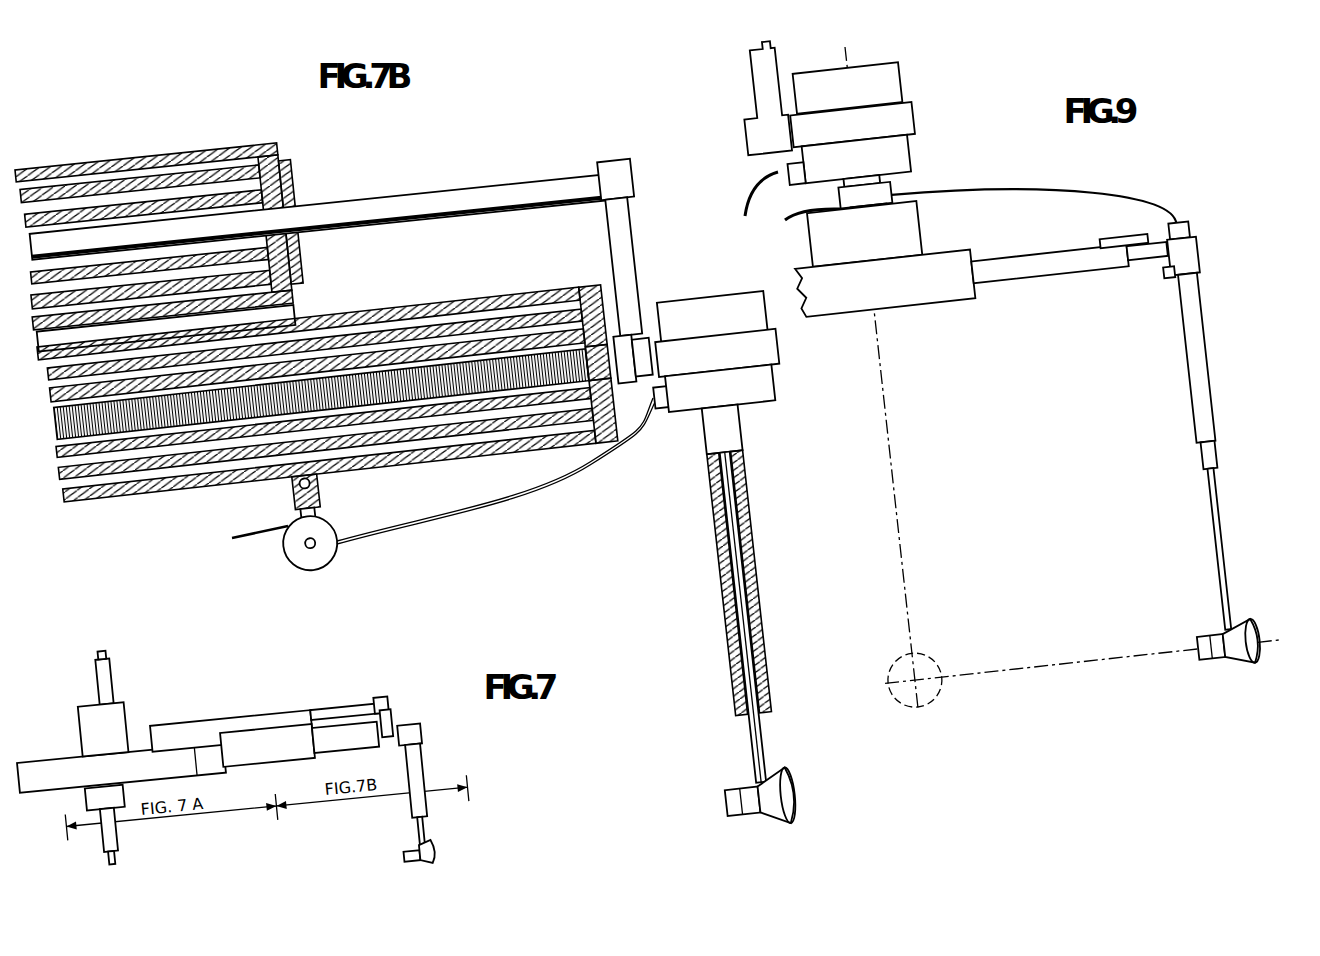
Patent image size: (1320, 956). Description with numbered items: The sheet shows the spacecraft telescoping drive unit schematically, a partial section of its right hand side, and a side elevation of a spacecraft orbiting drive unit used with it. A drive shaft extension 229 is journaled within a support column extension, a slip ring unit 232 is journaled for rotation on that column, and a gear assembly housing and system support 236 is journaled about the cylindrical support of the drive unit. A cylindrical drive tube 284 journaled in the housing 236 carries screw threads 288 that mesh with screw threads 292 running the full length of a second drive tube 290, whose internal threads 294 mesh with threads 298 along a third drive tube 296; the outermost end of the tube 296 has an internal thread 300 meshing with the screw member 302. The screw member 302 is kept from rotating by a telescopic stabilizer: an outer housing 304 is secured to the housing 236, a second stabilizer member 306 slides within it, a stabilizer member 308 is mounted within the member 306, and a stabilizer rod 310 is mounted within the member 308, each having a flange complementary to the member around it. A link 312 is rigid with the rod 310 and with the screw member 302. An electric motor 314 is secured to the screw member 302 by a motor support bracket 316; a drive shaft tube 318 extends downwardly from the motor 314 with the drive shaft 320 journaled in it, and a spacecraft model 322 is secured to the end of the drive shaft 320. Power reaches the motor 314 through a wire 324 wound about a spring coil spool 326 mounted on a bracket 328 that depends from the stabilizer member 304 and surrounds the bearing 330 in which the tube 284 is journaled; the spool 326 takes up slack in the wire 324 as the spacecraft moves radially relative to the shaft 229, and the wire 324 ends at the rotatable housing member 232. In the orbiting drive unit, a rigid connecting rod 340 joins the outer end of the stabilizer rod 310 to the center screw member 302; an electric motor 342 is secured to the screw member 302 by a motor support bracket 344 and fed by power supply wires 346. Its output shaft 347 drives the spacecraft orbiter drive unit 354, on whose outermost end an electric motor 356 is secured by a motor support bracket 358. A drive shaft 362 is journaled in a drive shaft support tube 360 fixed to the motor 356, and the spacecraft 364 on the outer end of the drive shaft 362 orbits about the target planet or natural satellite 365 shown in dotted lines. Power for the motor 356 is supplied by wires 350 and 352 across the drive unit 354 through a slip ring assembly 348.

In FIG. 7, the drive shaft extension 229 is at (105, 665).
In FIG. 7, the slip ring unit 232 is at (85, 800).
In FIG. 7, the gear assembly housing and system support 236 is at (126, 705).
In FIG. 7B, the cylindrical drive tube 284 is at (467, 300).
In FIG. 7, the cylindrical drive tube 284 is at (352, 752).
In FIG. 7B, the screw threads 288 is at (600, 298).
In FIG. 7B, the second drive tube 290 is at (612, 345).
In FIG. 7B, the screw threads 292 is at (455, 445).
In FIG. 7B, the internal threads 294 is at (625, 413).
In FIG. 7B, the third drive tube 296 is at (625, 340).
In FIG. 7B, the threads 298 is at (375, 452).
In FIG. 7B, the internal thread 300 is at (601, 383).
In FIG. 7B, the screw member 302 is at (45, 432).
In FIG. 7B, the outer housing 304 is at (230, 145).
In FIG. 7, the outer housing 304 is at (250, 718).
In FIG. 7B, the second stabilizer member 306 is at (283, 167).
In FIG. 7B, the stabilizer member 308 is at (290, 194).
In FIG. 7B, the stabilizer rod 310 is at (463, 186).
In FIG. 7, the stabilizer rod 310 is at (355, 707).
In FIG. 7B, the link 312 is at (620, 232).
In FIG. 7B, the electric motor 314 is at (765, 294).
In FIG. 7, the electric motor 314 is at (410, 727).
In FIG. 7B, the motor support bracket 316 is at (770, 345).
In FIG. 7B, the drive shaft tube 318 is at (748, 497).
In FIG. 7B, the drive shaft 320 is at (755, 572).
In FIG. 7B, the spacecraft model 322 is at (790, 790).
In FIG. 7, the spacecraft model 322 is at (435, 855).
In FIG. 7B, the wire 324 is at (478, 503).
In FIG. 7B, the spring coil spool 326 is at (288, 555).
In FIG. 7B, the bracket 328 is at (316, 515).
In FIG. 7B, the bearing 330 is at (292, 486).
In FIG. 9, the rigid connecting rod 340 is at (749, 83).
In FIG. 9, the electric motor 342 is at (893, 72).
In FIG. 9, the motor support bracket 344 is at (905, 120).
In FIG. 9, the power supply wires 346 is at (755, 191).
In FIG. 9, the output shaft 347 is at (883, 184).
In FIG. 9, the slip ring assembly 348 is at (833, 203).
In FIG. 9, the wire 350 is at (790, 220).
In FIG. 9, the wire 352 is at (1022, 188).
In FIG. 9, the spacecraft orbiter drive unit 354 is at (910, 235).
In FIG. 9, the electric motor 356 is at (1178, 226).
In FIG. 9, the motor support bracket 358 is at (1199, 255).
In FIG. 9, the drive shaft support tube 360 is at (1205, 368).
In FIG. 9, the drive shaft 362 is at (1215, 498).
In FIG. 9, the spacecraft 364 is at (1248, 625).
In FIG. 9, the target planet or natural satellite 365 is at (930, 650).